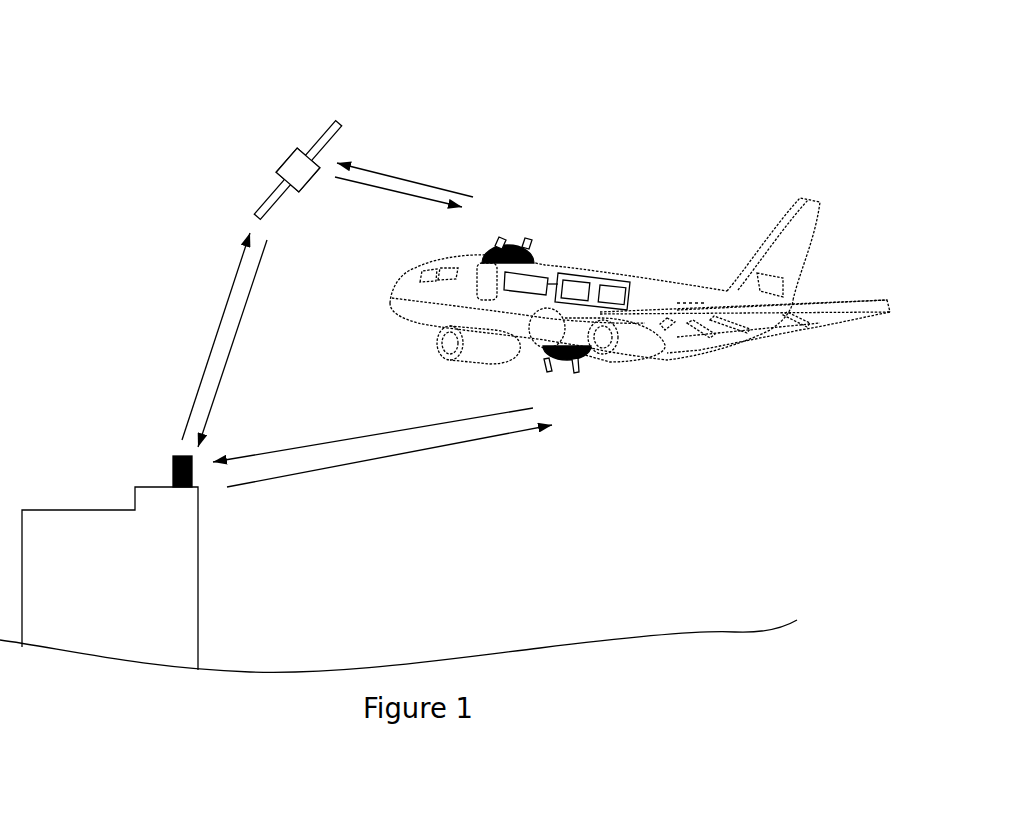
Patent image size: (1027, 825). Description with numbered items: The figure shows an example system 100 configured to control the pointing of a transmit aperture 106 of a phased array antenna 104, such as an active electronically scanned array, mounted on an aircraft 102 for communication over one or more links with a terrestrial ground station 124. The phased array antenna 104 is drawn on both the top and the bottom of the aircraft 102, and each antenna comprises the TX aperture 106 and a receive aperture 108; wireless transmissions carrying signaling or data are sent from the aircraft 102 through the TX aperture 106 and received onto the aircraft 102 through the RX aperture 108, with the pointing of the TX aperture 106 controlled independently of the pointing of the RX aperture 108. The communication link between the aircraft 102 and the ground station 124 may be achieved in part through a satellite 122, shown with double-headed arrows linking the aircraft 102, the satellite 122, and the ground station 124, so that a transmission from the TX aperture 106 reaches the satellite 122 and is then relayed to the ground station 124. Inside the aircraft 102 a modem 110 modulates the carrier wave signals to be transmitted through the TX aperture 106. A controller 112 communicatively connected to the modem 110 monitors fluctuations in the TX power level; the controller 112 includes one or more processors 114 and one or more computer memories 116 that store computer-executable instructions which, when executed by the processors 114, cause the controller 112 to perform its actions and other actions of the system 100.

The system 100 is at (76, 33).
The aircraft 102 is at (685, 380).
The phased array antenna 104 is at (492, 252).
The transmit (TX) aperture 106 is at (504, 236).
The receive (RX) aperture 108 is at (530, 233).
The modem 110 is at (550, 272).
The controller 112 is at (635, 296).
The processors 114 is at (583, 281).
The computer memories 116 is at (630, 282).
The satellite 122 is at (278, 155).
The ground station 124 is at (80, 508).